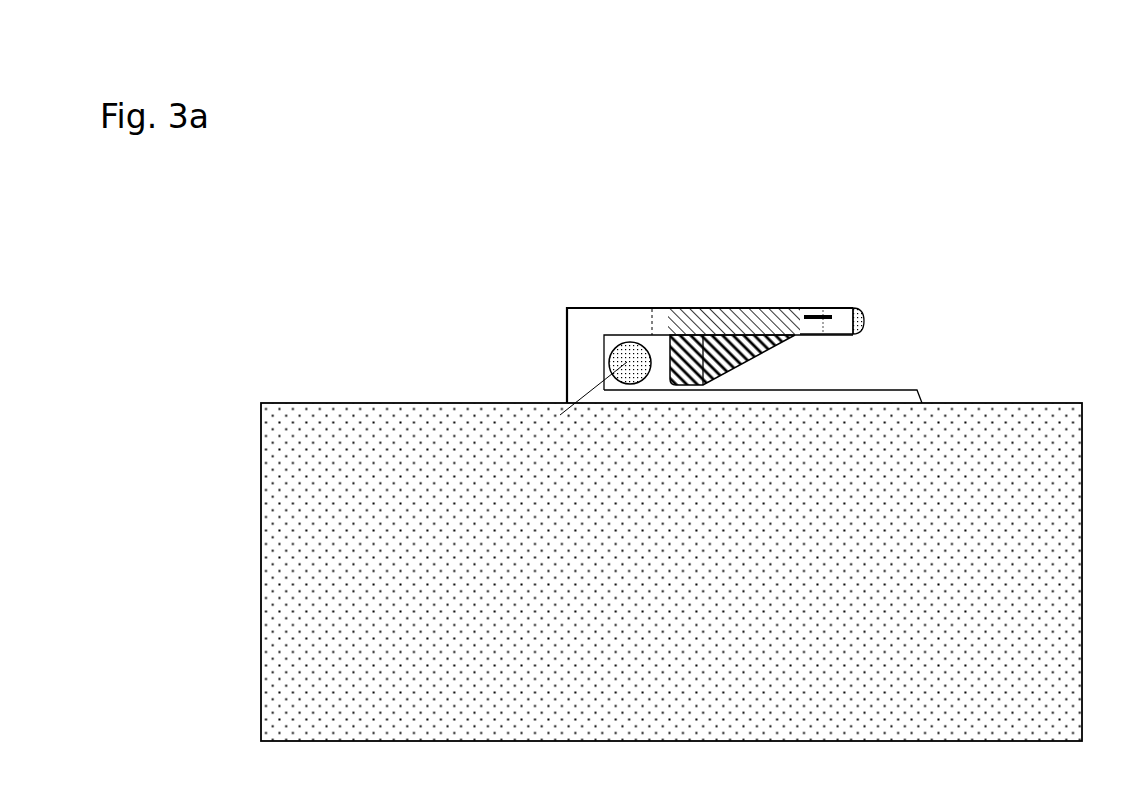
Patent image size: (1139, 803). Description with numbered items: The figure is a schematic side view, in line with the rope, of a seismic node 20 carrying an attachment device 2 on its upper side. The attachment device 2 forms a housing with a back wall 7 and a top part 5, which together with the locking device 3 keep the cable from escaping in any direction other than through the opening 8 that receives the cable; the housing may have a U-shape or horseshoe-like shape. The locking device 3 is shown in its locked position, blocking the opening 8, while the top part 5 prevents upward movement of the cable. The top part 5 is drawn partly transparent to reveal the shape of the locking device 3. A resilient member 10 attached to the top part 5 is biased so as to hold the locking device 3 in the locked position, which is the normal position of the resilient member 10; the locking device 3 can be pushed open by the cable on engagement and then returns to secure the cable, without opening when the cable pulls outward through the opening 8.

The seismic node 20 is at (671, 572).
The back wall 7 is at (585, 342).
The attachment device 2 is at (835, 398).
The locking device 3 is at (732, 337).
The top part 5 is at (633, 323).
The opening 8 is at (847, 360).
The resilient member 10 is at (836, 292).